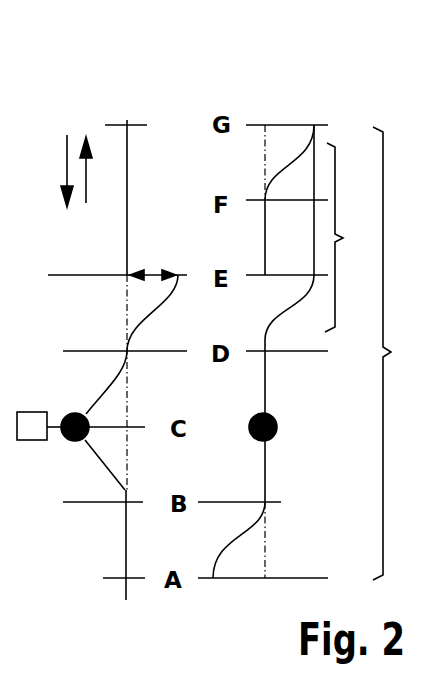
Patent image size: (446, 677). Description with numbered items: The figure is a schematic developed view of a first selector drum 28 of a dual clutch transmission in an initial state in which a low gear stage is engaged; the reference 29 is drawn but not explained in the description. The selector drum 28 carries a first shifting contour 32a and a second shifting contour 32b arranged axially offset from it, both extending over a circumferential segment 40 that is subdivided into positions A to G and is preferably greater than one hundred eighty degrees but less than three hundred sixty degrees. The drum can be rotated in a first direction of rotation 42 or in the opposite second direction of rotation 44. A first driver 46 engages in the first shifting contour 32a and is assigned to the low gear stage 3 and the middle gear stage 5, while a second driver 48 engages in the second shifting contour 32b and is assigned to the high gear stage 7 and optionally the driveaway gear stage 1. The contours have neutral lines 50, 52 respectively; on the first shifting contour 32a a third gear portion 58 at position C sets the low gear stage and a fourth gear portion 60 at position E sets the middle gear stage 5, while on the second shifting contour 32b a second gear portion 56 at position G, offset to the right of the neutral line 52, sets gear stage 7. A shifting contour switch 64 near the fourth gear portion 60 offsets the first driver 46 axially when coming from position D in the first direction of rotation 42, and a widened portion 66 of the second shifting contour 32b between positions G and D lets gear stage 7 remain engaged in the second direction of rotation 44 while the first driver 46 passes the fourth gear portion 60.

The first selector drum 28 is at (88, 105).
The shift gate 29 is at (204, 181).
The circumferential segment 40 is at (397, 353).
The first direction of rotation 42 is at (63, 157).
The second direction of rotation 44 is at (87, 183).
The first driver 46 is at (64, 412).
The second driver 48 is at (273, 414).
The neutral line 50 is at (126, 600).
The neutral line 52 is at (265, 578).
The second gear portion 56 is at (315, 125).
The third gear portion 58 is at (64, 443).
The fourth gear portion 60 is at (178, 272).
The shifting contour switch 64 is at (150, 280).
The widened portion 66 is at (350, 237).
The first shifting contour 32a is at (124, 540).
The second shifting contour 32b is at (266, 470).
The driveaway gear stage 1 is at (340, 582).
The low gear stage 3 is at (39, 426).
The middle gear stage 5 is at (108, 277).
The high gear stage 7 is at (341, 124).